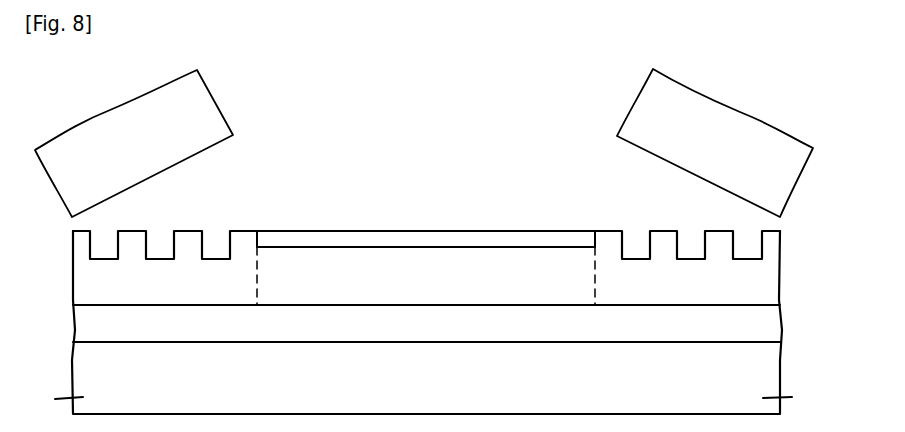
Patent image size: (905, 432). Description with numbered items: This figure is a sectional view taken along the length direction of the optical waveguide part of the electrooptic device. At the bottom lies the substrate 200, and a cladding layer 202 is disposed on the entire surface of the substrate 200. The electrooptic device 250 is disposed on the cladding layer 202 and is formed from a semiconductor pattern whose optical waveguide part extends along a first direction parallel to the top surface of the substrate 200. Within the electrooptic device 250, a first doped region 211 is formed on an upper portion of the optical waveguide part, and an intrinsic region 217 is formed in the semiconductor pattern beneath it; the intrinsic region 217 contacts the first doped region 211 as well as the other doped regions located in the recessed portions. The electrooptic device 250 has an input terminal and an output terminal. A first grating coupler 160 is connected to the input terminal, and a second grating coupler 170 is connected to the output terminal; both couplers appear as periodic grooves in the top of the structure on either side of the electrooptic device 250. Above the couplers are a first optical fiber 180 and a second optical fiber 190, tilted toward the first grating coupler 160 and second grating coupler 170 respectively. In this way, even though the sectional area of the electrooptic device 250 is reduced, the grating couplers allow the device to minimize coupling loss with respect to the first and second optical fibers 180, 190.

The first grating coupler 160 is at (185, 210).
The second grating coupler 170 is at (668, 207).
The first optical fiber 180 is at (126, 117).
The second optical fiber 190 is at (726, 118).
The substrate 200 is at (765, 373).
The cladding layer 202 is at (767, 322).
The first doped region 211 is at (502, 240).
The intrinsic region 217 is at (439, 293).
The electrooptic device 250 is at (413, 228).